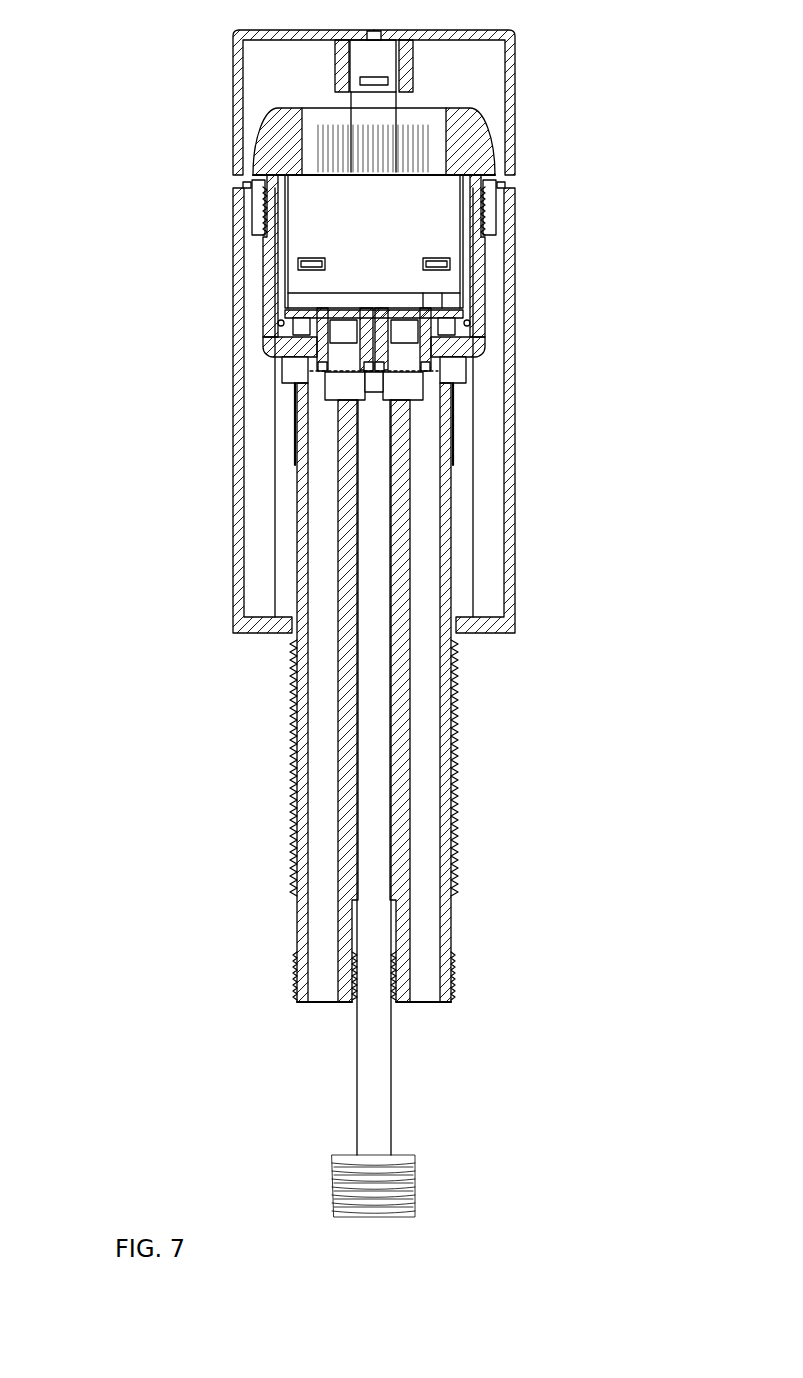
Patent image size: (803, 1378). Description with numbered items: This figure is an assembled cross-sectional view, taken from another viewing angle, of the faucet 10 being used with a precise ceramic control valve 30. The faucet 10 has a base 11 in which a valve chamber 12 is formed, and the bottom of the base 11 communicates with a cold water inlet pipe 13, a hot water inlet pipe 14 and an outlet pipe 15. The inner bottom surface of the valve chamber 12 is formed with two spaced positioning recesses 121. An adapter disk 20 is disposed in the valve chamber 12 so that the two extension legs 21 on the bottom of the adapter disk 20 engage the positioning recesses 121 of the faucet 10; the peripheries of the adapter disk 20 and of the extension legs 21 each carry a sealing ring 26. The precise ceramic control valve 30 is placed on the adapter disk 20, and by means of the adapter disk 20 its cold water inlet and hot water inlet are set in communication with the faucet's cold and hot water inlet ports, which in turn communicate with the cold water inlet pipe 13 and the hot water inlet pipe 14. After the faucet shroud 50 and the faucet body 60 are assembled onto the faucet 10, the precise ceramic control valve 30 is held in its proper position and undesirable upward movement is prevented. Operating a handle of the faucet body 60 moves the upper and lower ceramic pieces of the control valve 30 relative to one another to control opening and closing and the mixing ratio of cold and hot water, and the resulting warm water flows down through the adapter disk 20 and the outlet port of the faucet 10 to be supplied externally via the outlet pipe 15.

The faucet 10 is at (500, 347).
The base 11 is at (263, 233).
The valve chamber 12 is at (465, 270).
The positioning recesses 121 is at (268, 345).
The extension legs 21 is at (374, 361).
The adapter disk 20 is at (280, 307).
The sealing ring 26 is at (307, 373).
The precise ceramic control valve 30 is at (440, 223).
The faucet shroud 50 is at (267, 118).
The faucet body 60 is at (525, 510).
The cold water inlet pipe 13 is at (428, 822).
The hot water inlet pipe 14 is at (330, 833).
The outlet pipe 15 is at (375, 1075).